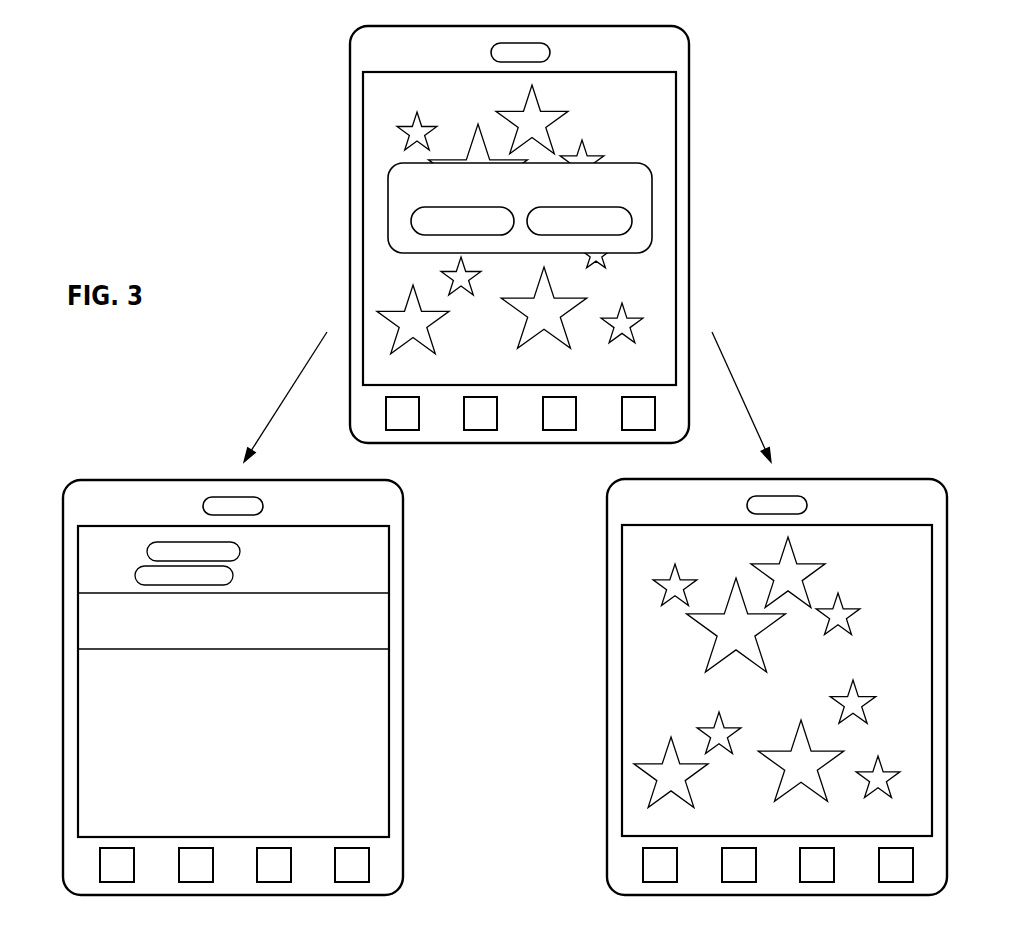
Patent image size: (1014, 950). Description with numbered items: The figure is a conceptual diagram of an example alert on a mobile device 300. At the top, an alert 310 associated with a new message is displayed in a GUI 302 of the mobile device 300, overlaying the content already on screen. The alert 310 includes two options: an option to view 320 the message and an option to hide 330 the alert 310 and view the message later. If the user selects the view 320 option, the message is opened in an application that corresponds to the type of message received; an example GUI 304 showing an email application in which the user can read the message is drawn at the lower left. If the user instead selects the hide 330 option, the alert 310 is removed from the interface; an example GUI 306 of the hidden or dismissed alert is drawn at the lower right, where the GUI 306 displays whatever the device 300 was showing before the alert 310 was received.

The mobile device 300 is at (690, 277).
The GUI 302 is at (675, 214).
The example GUI showing an email application 304 is at (389, 630).
The example GUI of a hidden or dismissed alert 306 is at (932, 630).
The alert 310 is at (525, 204).
The view option 320 is at (411, 222).
The hide option 330 is at (628, 229).